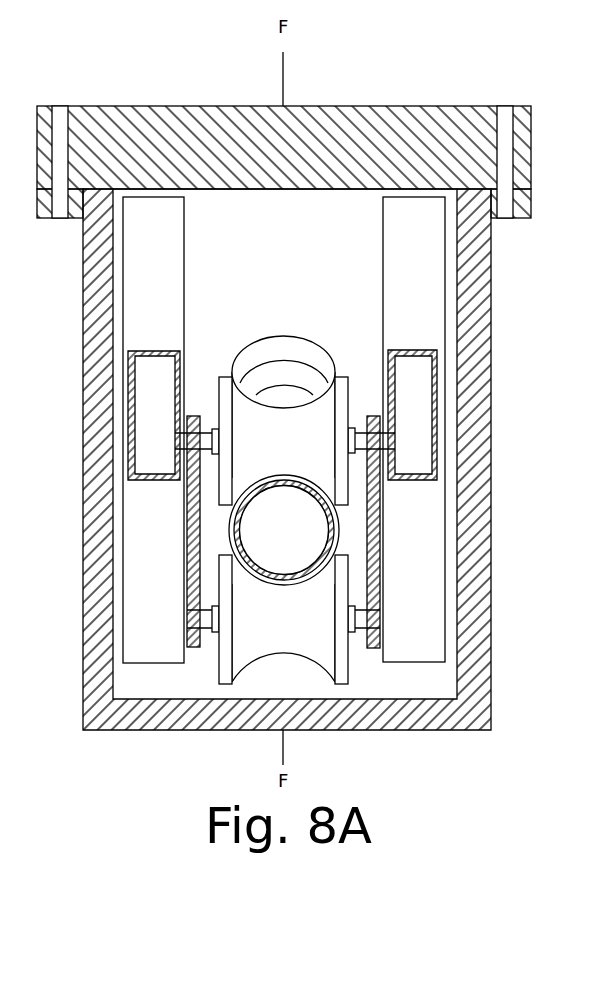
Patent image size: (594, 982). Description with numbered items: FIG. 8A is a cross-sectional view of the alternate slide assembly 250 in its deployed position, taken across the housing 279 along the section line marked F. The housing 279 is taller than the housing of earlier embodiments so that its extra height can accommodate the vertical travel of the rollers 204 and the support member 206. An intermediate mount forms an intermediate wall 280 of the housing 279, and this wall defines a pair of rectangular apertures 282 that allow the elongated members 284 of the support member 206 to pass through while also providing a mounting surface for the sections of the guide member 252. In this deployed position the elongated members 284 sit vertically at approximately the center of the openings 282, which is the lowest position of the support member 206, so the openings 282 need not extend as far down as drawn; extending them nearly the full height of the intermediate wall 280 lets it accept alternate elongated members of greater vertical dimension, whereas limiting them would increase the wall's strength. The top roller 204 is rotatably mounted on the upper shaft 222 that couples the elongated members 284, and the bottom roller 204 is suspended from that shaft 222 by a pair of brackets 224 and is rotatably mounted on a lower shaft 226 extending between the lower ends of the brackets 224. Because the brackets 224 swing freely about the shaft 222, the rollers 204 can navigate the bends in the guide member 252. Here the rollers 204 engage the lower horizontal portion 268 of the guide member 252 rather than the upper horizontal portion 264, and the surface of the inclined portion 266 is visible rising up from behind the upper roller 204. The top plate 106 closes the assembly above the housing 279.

The top plate / cover 106 is at (193, 118).
The slide assembly 250 is at (383, 88).
The housing 279 is at (140, 717).
The intermediate wall 280 is at (257, 229).
The apertures 282 is at (125, 516).
The support member 206 is at (128, 477).
The elongated members 284 is at (177, 367).
The shaft 222 is at (425, 432).
The brackets 224 is at (193, 647).
The lower shaft 226 is at (360, 620).
The rollers 204 is at (325, 450).
The upper horizontal section 264 is at (290, 335).
The inclined section 266 is at (285, 360).
The lower horizontal section 268 is at (235, 533).
The guide member 252 is at (250, 560).